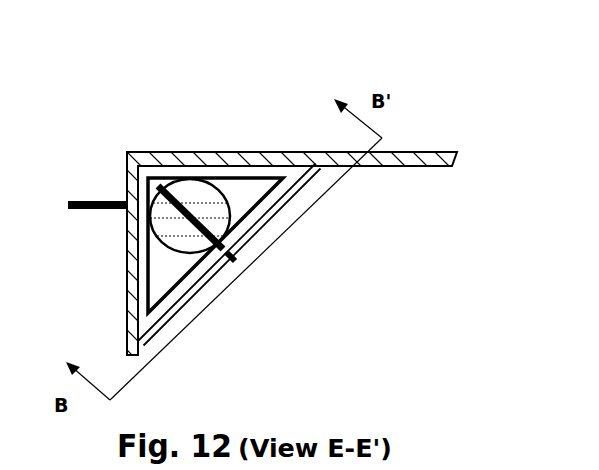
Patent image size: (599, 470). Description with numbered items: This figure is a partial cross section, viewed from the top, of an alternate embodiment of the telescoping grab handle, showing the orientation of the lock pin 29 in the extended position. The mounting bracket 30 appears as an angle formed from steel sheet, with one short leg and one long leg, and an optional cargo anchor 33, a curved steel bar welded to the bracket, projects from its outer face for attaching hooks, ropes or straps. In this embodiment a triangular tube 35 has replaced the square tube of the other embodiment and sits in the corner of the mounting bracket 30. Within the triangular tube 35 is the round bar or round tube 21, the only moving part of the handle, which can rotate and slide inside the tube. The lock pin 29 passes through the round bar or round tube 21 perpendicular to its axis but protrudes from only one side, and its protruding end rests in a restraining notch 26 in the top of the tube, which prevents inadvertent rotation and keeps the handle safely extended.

The round bar or round tube 21 is at (157, 185).
The restraining notch 26 is at (225, 253).
The lock pin 29 is at (206, 213).
The mounting bracket 30 is at (268, 152).
The cargo anchor 33 is at (93, 202).
The triangular tube 35 is at (176, 297).